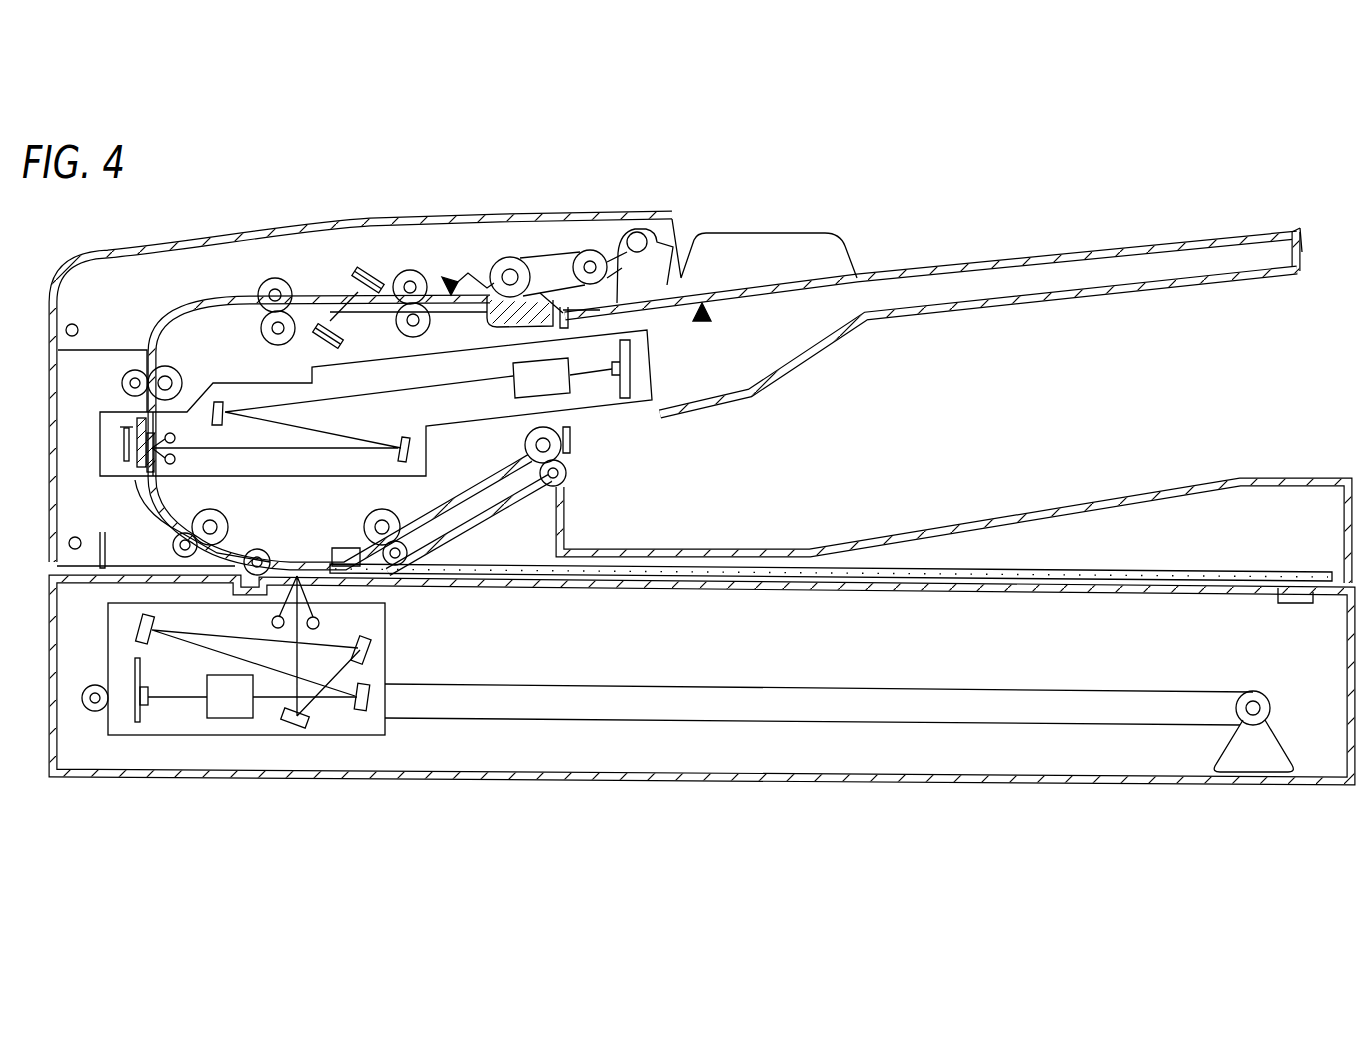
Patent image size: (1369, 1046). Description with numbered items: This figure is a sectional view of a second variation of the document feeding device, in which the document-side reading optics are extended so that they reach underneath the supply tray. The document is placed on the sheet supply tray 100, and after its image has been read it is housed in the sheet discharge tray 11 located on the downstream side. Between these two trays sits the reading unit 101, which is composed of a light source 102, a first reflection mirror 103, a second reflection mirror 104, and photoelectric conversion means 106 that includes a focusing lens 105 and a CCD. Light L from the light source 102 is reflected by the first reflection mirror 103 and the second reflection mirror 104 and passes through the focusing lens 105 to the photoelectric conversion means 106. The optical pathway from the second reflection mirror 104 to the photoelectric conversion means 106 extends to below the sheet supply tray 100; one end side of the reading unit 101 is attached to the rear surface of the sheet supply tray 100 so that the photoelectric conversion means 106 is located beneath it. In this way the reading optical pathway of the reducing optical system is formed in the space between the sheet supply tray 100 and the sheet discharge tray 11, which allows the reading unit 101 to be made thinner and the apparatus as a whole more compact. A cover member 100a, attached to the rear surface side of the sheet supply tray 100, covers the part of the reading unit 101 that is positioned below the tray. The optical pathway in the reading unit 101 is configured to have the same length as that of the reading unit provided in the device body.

The sheet supply tray 100 is at (1018, 230).
The cover member 100a is at (811, 371).
The sheet discharge tray 11 is at (1105, 482).
The reading unit 101 is at (308, 493).
The light source 102 is at (174, 436).
The first reflection mirror 103 is at (410, 436).
The second reflection mirror 104 is at (226, 404).
The focusing lens 105 is at (528, 390).
The photoelectric conversion means 106 is at (618, 376).
The light L is at (376, 394).